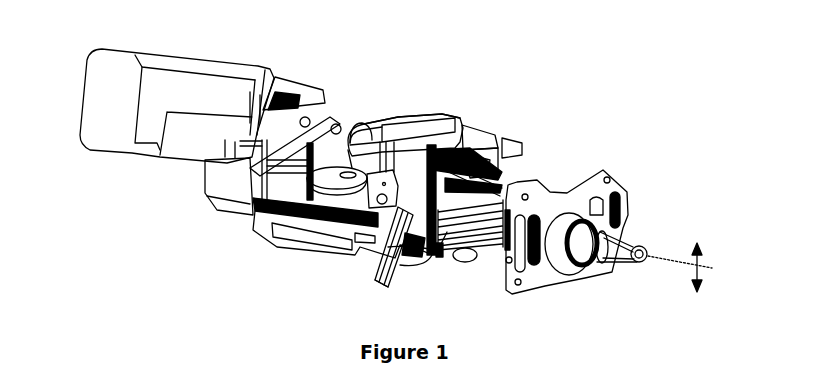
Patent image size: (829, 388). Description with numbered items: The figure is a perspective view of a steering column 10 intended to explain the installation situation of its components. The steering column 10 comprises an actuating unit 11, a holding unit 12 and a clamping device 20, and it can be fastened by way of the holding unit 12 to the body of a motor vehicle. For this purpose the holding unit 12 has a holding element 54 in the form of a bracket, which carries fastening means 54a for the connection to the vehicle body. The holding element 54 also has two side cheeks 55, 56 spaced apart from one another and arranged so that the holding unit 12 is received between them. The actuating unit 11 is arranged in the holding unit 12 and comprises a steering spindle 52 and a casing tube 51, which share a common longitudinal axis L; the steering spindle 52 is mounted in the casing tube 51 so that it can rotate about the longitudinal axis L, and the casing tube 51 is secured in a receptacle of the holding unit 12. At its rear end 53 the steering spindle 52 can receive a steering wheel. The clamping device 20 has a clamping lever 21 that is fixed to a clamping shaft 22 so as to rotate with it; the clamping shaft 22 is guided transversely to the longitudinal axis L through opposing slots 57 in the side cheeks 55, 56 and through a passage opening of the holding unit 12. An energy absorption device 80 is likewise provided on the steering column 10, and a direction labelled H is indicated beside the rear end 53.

The steering column 10 is at (366, 73).
The actuating unit 11 is at (540, 190).
The holding unit 12 is at (287, 192).
The clamping device 20 is at (357, 271).
The clamping lever 21 is at (373, 275).
The clamping shaft 22 is at (461, 124).
The casing tube 51 is at (512, 184).
The steering spindle 52 is at (628, 210).
The rear end 53 is at (632, 254).
The holding element 54 is at (449, 117).
The fastening means 54a is at (338, 126).
The side cheek 55 is at (399, 118).
The side cheek 56 is at (477, 137).
The slots 57 is at (413, 117).
The energy absorption device 80 is at (463, 265).
The longitudinal axis L is at (670, 260).
The height direction H is at (698, 268).